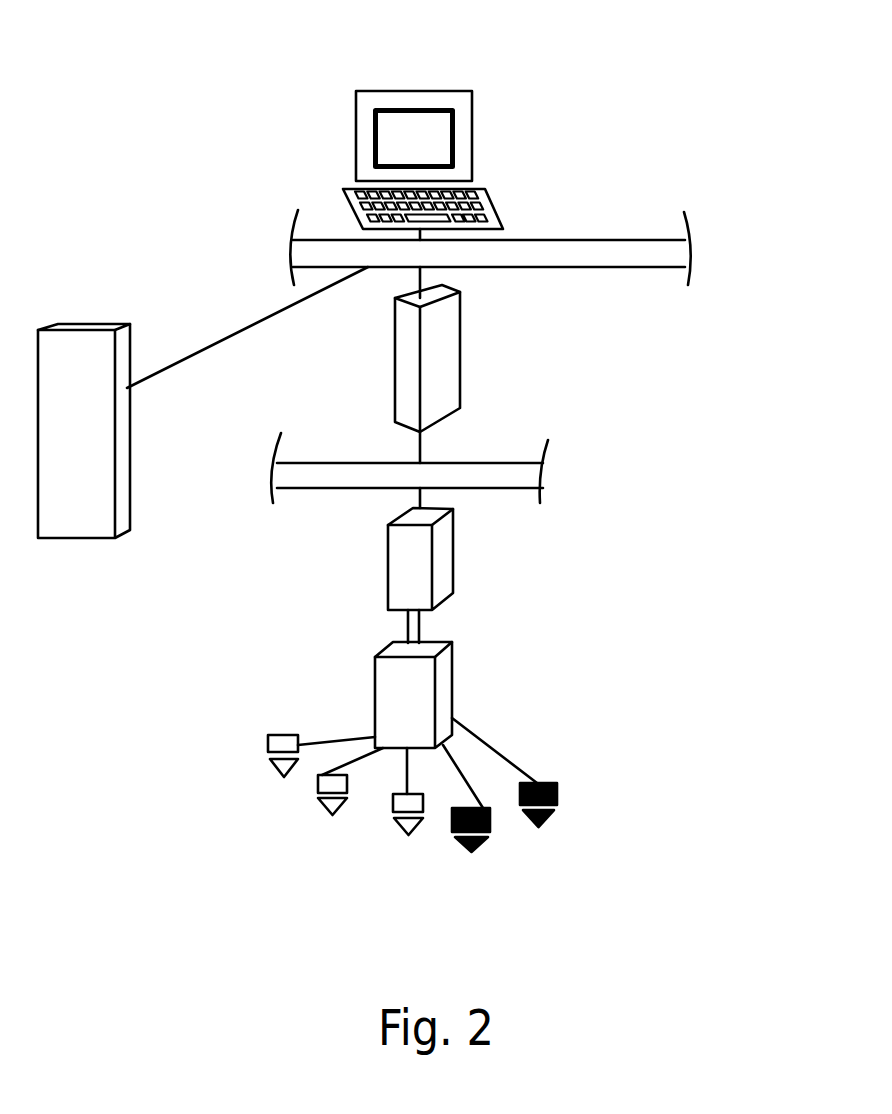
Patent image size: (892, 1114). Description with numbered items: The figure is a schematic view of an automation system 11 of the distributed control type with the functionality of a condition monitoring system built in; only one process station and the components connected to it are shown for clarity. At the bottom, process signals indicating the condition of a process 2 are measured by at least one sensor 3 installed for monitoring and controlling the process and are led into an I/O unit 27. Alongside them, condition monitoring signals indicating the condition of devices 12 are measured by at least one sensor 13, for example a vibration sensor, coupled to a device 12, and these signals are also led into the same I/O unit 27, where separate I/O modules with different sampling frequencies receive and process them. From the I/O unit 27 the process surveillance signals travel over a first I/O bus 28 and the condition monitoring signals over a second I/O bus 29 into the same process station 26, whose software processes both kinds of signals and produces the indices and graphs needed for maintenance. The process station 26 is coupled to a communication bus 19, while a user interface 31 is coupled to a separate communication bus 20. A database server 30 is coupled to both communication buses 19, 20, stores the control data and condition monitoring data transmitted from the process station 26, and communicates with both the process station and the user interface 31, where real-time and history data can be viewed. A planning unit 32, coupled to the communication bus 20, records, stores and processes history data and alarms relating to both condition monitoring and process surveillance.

The system 11 is at (198, 78).
The user interface 31 is at (468, 122).
The communication bus 20 is at (613, 240).
The database server 30 is at (452, 338).
The communication bus 19 is at (378, 463).
The process station 26 is at (452, 560).
The I/O bus 29 is at (408, 624).
The first I/O bus 28 is at (419, 624).
The I/O unit 27 is at (452, 673).
The sensor 13 is at (268, 740).
The device 12 is at (275, 762).
The sensor 3 is at (557, 787).
The process 2 is at (542, 820).
The planning unit 32 is at (68, 538).